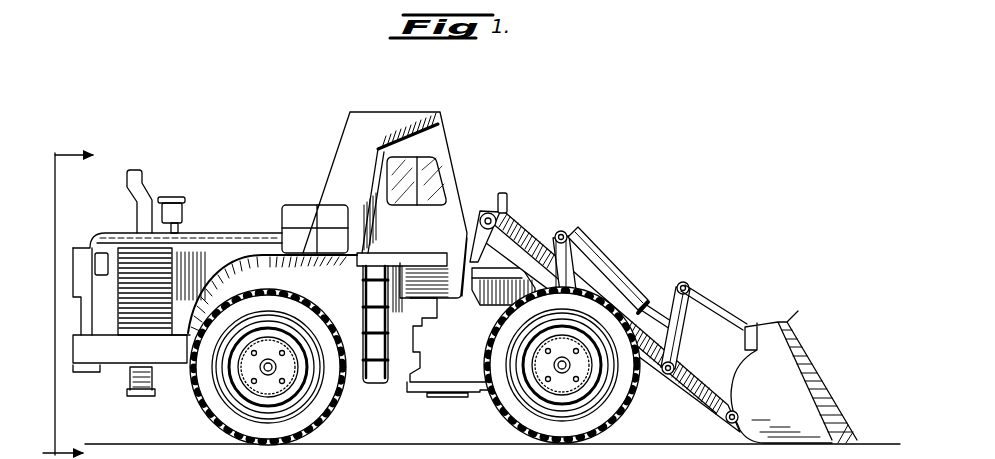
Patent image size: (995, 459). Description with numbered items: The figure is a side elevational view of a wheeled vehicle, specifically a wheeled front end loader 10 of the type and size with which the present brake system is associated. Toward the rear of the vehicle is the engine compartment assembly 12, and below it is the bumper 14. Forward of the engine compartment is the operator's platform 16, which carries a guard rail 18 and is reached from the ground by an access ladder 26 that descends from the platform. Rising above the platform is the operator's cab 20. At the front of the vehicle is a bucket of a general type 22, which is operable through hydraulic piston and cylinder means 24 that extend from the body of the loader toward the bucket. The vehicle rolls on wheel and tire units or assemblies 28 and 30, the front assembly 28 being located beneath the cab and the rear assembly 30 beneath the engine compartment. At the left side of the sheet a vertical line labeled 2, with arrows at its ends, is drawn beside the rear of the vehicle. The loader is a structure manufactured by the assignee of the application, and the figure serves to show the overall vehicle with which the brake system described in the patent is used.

The section line 2- 2 is at (63, 297).
The wheeled front end loader 10 is at (467, 283).
The engine compartment assembly 12 is at (207, 240).
The bumper 14 is at (102, 362).
The operator's platform 16 is at (397, 262).
The guard rail 18 is at (298, 205).
The operator's cab 20 is at (478, 134).
The bucket 22 is at (838, 379).
The hydraulic piston and cylinder means 24 is at (632, 267).
The access ladder 26 is at (382, 386).
The wheel and tire unit 28 is at (511, 405).
The wheel and tire unit 30 is at (201, 415).